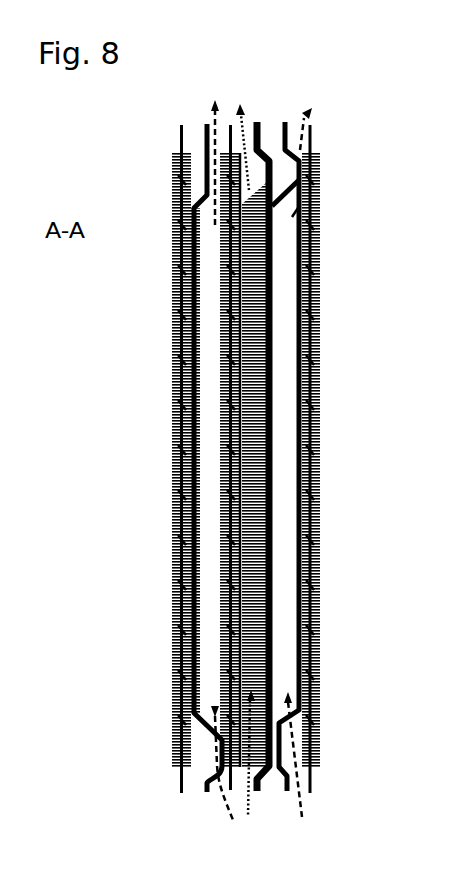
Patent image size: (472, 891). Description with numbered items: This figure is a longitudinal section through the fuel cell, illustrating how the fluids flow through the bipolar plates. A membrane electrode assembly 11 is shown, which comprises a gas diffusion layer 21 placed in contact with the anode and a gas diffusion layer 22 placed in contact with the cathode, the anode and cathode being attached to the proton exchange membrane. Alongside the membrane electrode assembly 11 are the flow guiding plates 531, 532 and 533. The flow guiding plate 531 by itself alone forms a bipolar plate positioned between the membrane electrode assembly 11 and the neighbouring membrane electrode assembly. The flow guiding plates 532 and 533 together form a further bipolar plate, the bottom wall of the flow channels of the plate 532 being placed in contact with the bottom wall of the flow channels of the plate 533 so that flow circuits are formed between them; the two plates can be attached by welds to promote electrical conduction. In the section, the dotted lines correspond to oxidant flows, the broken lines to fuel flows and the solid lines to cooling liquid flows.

The membrane electrode assembly 11 is at (176, 127).
The gas diffusion layer 21 is at (173, 167).
The gas diffusion layer 22 is at (318, 200).
The flow guiding plate 531 is at (202, 118).
The flow guiding plate 532 is at (256, 118).
The flow guiding plate 533 is at (290, 116).